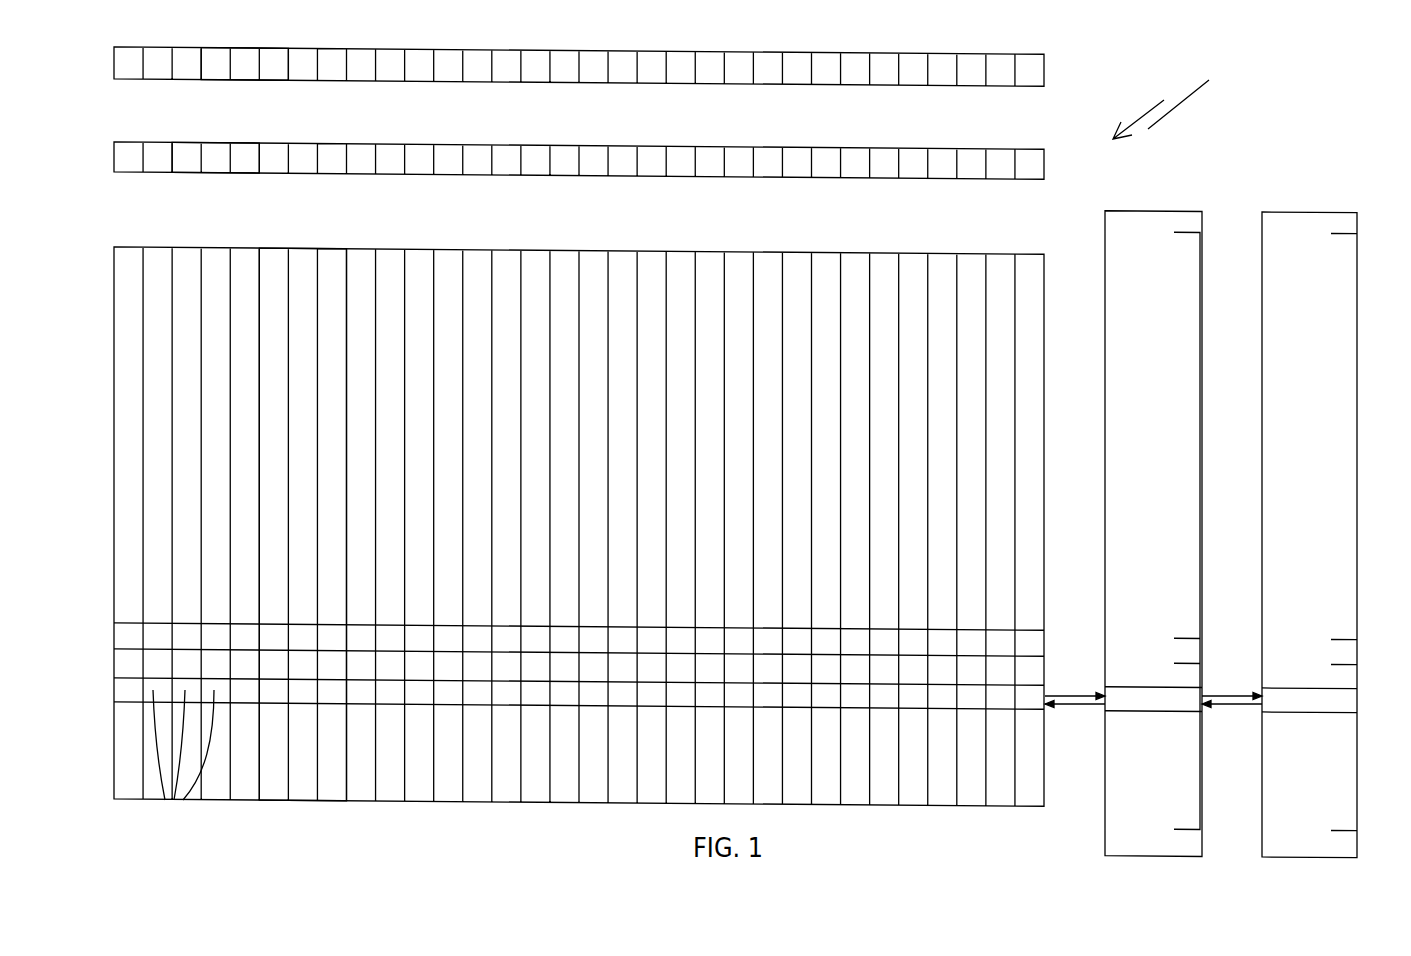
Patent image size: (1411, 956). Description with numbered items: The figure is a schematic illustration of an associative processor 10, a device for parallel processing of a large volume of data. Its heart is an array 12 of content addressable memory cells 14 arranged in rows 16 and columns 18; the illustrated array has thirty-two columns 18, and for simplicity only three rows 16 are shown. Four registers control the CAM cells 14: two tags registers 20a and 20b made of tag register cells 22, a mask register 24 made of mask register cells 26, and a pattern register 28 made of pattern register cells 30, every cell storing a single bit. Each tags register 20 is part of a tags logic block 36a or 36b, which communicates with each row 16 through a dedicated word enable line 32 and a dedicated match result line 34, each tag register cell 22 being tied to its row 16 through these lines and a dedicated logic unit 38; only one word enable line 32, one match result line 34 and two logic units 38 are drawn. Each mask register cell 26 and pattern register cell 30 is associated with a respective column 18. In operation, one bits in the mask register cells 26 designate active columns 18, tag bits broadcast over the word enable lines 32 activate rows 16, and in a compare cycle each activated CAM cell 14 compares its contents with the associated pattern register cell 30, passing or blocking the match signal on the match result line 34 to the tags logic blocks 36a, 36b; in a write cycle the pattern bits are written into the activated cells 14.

The associative processor 10 is at (1162, 97).
The array 12 is at (1033, 262).
The content addressable memory cell 14 is at (183, 758).
The row 16 is at (113, 641).
The column 18 is at (272, 792).
The tags register 20 is at (590, 133).
The tags register 20a is at (1190, 260).
The tags register 20b is at (1342, 263).
The tag register cell 22 is at (1190, 648).
The mask register 24 is at (1020, 179).
The mask register cell 26 is at (185, 173).
The pattern register 28 is at (1036, 85).
The pattern register cell 30 is at (210, 80).
The word enable line 32 is at (1086, 706).
The match result line 34 is at (1078, 696).
The tags logic block 36a is at (1140, 352).
The tags logic block 36b is at (1297, 352).
The logic unit 38 is at (1128, 697).